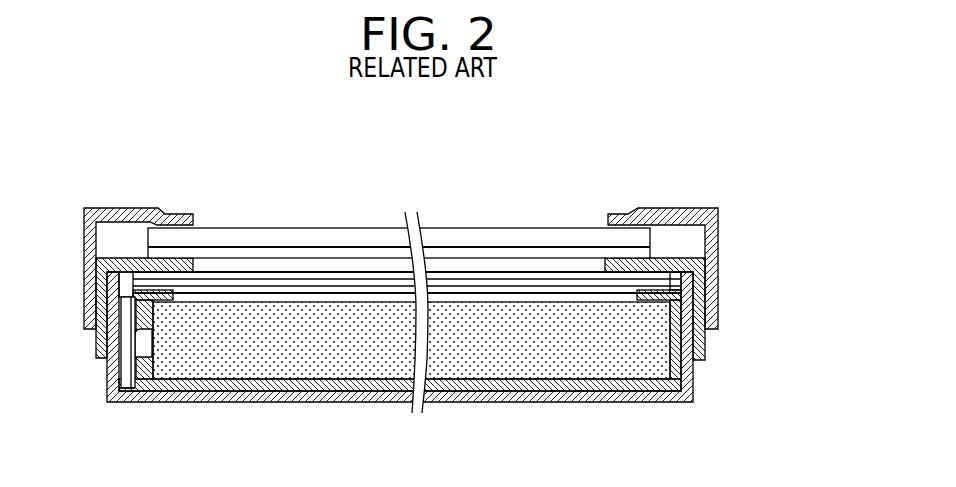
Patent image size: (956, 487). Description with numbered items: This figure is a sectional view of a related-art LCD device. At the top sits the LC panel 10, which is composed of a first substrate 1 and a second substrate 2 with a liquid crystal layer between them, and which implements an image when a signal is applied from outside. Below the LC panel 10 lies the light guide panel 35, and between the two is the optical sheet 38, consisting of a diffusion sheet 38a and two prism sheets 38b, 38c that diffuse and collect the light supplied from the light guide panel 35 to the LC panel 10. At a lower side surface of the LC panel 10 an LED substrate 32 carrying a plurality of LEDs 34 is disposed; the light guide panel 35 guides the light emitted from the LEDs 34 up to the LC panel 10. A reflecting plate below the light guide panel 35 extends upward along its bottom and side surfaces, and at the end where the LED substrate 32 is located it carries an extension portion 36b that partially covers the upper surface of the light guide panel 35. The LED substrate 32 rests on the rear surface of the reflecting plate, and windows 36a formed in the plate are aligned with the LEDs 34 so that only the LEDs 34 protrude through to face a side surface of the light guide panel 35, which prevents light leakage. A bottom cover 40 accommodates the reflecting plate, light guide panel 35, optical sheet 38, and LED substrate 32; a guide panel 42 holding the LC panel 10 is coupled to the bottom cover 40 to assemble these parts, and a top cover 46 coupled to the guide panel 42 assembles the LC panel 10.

The first substrate 1 is at (263, 248).
The second substrate 2 is at (293, 236).
The LC panel 10 is at (328, 222).
The LED substrate 32 is at (128, 380).
The LEDs 34 is at (152, 347).
The light guide panel 35 is at (302, 353).
The windows 36a is at (101, 340).
The extension portion 36b is at (119, 283).
The optical sheet 38 is at (407, 216).
The diffusion sheet 38a is at (515, 289).
The prism sheet 38b is at (483, 284).
The prism sheet 38c is at (460, 273).
The bottom cover 40 is at (694, 380).
The guide panel 42 is at (700, 340).
The top cover 46 is at (684, 208).